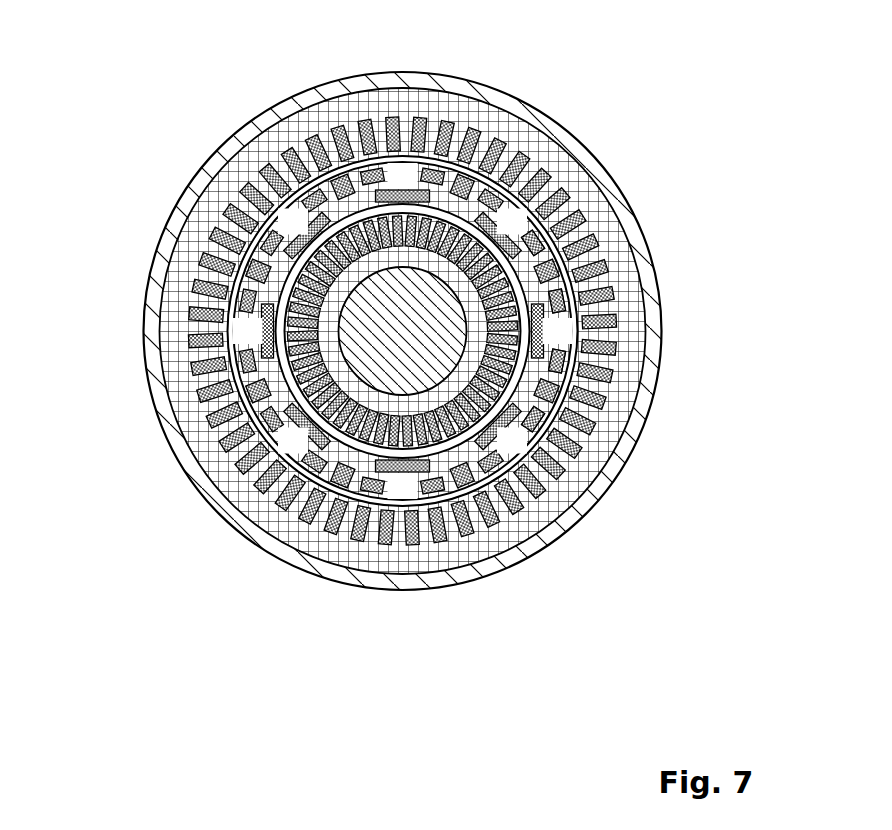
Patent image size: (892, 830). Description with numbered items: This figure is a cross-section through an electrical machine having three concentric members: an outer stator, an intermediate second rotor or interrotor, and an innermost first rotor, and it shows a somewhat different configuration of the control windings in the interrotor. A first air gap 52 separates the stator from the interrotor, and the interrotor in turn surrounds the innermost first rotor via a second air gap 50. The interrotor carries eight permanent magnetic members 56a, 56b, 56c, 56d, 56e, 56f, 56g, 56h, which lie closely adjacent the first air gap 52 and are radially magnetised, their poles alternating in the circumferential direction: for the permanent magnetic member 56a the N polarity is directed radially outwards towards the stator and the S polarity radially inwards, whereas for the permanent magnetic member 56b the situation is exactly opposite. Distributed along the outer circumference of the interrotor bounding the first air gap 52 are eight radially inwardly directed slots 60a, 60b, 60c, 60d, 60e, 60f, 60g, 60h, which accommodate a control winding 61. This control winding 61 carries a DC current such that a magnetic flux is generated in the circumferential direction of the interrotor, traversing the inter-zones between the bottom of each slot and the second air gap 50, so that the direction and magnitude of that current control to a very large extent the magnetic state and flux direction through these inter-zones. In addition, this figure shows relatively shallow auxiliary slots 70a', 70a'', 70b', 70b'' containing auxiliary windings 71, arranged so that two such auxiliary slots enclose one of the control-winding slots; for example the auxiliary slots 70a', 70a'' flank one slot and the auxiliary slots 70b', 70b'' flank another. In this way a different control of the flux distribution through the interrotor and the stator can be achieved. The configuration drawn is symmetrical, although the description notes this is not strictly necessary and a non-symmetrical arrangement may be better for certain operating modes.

The second air gap 50 is at (430, 445).
The first air gap 52 is at (227, 370).
The permanent magnetic member 56a is at (513, 220).
The permanent magnetic member 56b is at (565, 329).
The permanent magnetic member 56c is at (522, 452).
The permanent magnetic member 56d is at (385, 462).
The permanent magnetic member 56e is at (277, 430).
The permanent magnetic member 56f is at (233, 307).
The permanent magnetic member 56g is at (277, 183).
The permanent magnetic member 56h is at (409, 182).
The radially inwardly directed slot 60a is at (550, 267).
The radially inwardly directed slot 60b is at (550, 380).
The radially inwardly directed slot 60c is at (455, 452).
The radially inwardly directed slot 60d is at (330, 478).
The radially inwardly directed slot 60e is at (258, 384).
The radially inwardly directed slot 60f is at (245, 258).
The radially inwardly directed slot 60g is at (330, 167).
The radially inwardly directed slot 60h is at (458, 172).
The control winding 61 is at (537, 277).
The auxiliary slot 70a' is at (595, 206).
The auxiliary slot 70a'' is at (633, 289).
The auxiliary slot 70b' is at (631, 375).
The auxiliary slot 70b'' is at (598, 458).
The auxiliary winding 71 is at (553, 300).